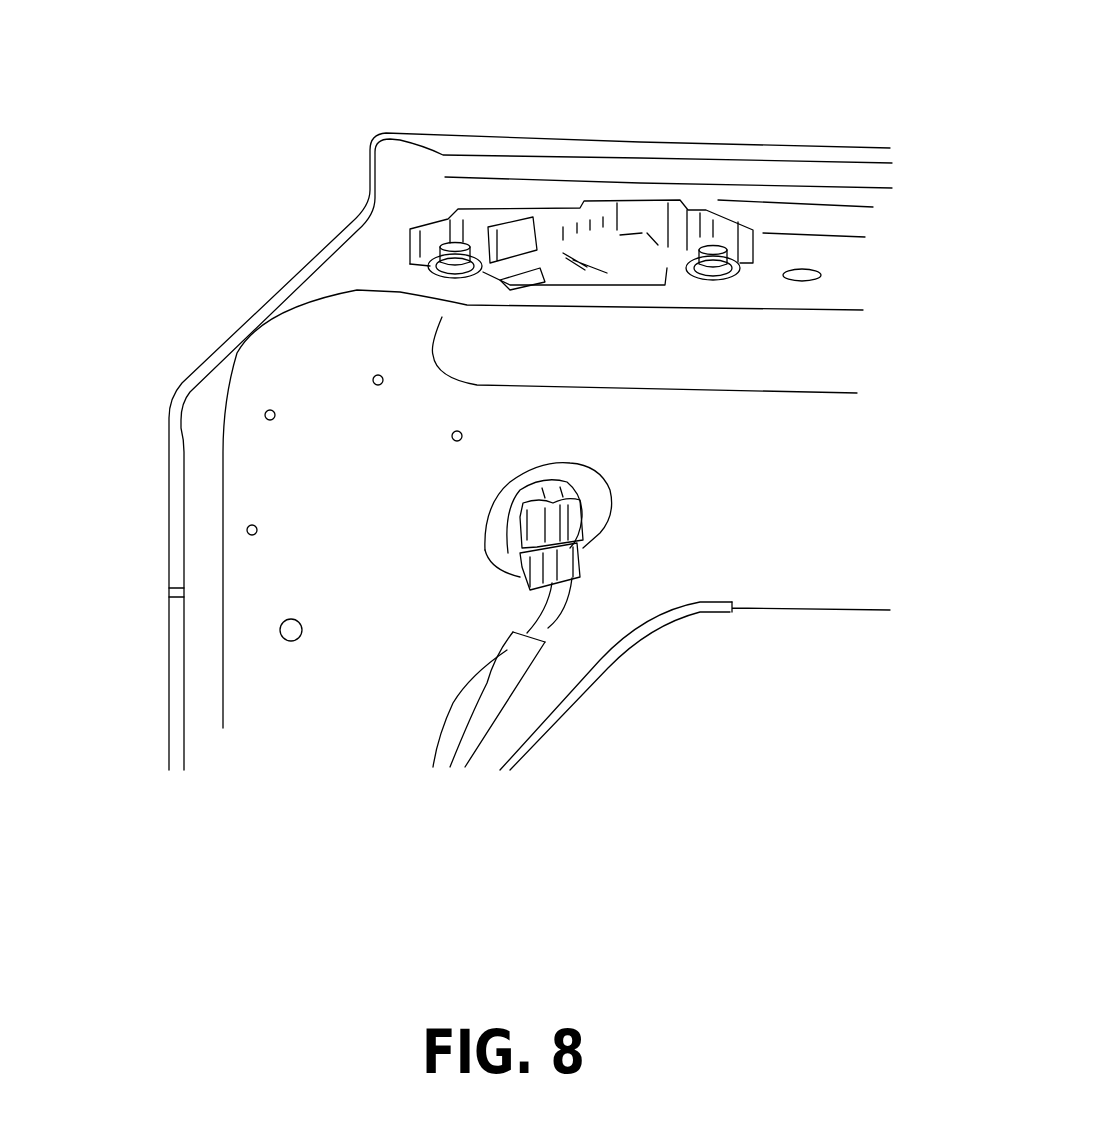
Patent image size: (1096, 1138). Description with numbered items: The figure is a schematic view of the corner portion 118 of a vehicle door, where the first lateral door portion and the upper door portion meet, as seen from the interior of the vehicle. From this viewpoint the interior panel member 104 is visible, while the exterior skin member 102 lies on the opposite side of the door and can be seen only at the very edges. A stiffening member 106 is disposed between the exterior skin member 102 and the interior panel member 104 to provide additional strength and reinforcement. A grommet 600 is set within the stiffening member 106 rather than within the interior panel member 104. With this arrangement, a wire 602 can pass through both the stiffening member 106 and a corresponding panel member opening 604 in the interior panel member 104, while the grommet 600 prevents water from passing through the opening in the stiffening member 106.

The exterior skin member 102 is at (480, 137).
The corner portion 118 is at (277, 317).
The interior panel member 104 is at (632, 575).
The stiffening member 106 is at (613, 505).
The grommet 600 is at (575, 522).
The wire 602 is at (548, 628).
The panel member opening 604 is at (587, 460).